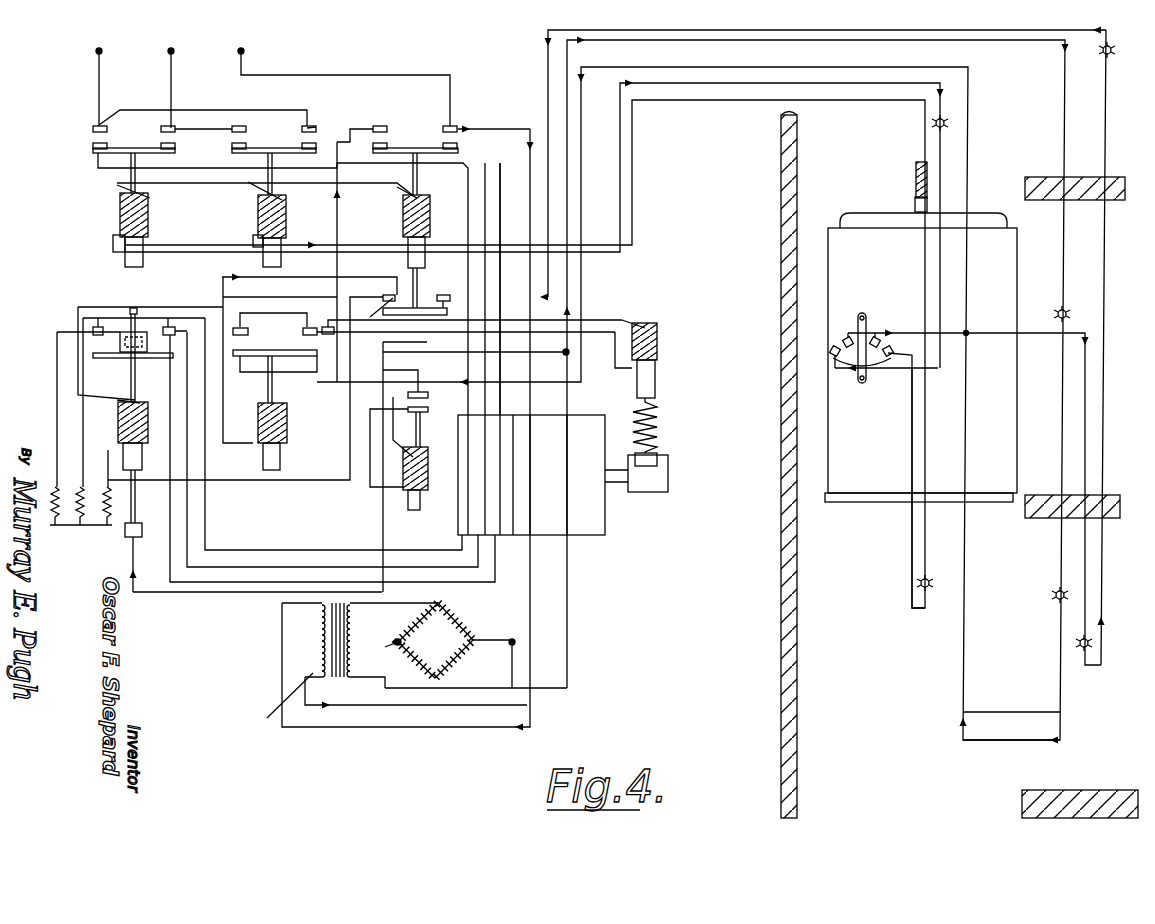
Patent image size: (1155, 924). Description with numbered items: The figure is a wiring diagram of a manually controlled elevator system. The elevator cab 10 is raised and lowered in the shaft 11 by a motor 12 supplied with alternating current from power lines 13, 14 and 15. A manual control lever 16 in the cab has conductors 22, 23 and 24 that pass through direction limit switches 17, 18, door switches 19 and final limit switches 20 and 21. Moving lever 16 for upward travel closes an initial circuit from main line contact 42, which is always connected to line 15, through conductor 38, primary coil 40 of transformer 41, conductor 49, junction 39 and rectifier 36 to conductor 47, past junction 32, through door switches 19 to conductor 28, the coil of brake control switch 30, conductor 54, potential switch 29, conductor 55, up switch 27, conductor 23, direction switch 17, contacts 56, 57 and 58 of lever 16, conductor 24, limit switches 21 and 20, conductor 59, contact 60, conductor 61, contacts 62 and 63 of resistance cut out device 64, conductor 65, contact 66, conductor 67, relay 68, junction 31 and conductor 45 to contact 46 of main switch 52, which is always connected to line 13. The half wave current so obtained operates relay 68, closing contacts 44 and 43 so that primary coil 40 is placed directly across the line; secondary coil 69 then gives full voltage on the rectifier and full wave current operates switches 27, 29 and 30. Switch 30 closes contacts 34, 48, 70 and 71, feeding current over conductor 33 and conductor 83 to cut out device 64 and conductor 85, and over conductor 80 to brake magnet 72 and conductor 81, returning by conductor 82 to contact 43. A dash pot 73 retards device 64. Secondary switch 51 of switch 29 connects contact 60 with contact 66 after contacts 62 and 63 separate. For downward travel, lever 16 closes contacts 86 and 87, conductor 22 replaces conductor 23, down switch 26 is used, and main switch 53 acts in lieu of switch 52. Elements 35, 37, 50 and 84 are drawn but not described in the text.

The elevator cab 10 is at (842, 496).
The shaft 11 is at (822, 182).
The motor 12 is at (605, 520).
The power line 13 is at (96, 66).
The power line 14 is at (165, 63).
The power line 15 is at (235, 63).
The manual control lever 16 is at (860, 314).
The direction limit switch 17 is at (932, 126).
The direction limit switch 18 is at (932, 582).
The door switches 19 is at (1055, 314).
The final limit switch 20 is at (1113, 52).
The final limit switch 21 is at (1103, 296).
The conductor 22 is at (175, 253).
The conductor 23 is at (303, 244).
The conductor 24 is at (918, 332).
The down main switch 26 is at (120, 220).
The up main switch 27 is at (260, 228).
The conductor 28 is at (317, 385).
The potential switch 29 is at (405, 220).
The brake control switch 30 is at (287, 432).
The junction 31 is at (399, 418).
The junction 32 is at (568, 352).
The conductor 33 is at (547, 353).
The contact 34 is at (303, 357).
The junction 35 is at (396, 638).
The rectifier 36 is at (435, 640).
The conductor 37 is at (474, 640).
The conductor 38 is at (528, 128).
The junction 39 is at (525, 641).
The primary coil 40 is at (320, 636).
The transformer 41 is at (279, 702).
The main line contact 42 is at (452, 127).
The relay contact 43 is at (428, 395).
The relay contact 44 is at (428, 410).
The conductor 45 is at (338, 215).
The main switch contact 46 is at (316, 127).
The conductor 47 is at (728, 41).
The contact 48 is at (303, 333).
The conductor 49 is at (512, 664).
The switch blade 50 is at (407, 145).
The secondary switch 51 is at (421, 305).
The main switch 52 is at (265, 143).
The main switch 53 is at (130, 143).
The conductor 54 is at (299, 277).
The conductor 55 is at (307, 185).
The contact 56 is at (830, 353).
The contact 57 is at (848, 352).
The contact 58 is at (850, 336).
The conductor 59 is at (548, 63).
The contact 60 is at (451, 292).
The conductor 61 is at (427, 343).
The contact 62 is at (125, 537).
The contact 63 is at (142, 530).
The resistance cut out device 64 is at (118, 425).
The conductor 65 is at (247, 483).
The contact 66 is at (398, 286).
The conductor 67 is at (370, 483).
The relay 68 is at (428, 483).
The secondary coil 69 is at (356, 638).
The contact 70 is at (275, 346).
The contact 71 is at (248, 332).
The brake magnet 72 is at (657, 360).
The dash pot 73 is at (120, 342).
The conductor 80 is at (328, 326).
The conductor 81 is at (277, 313).
The conductor 82 is at (250, 383).
The conductor 83 is at (297, 297).
The plunger 84 is at (135, 403).
The conductor 85 is at (103, 396).
The contact 86 is at (882, 336).
The contact 87 is at (894, 351).